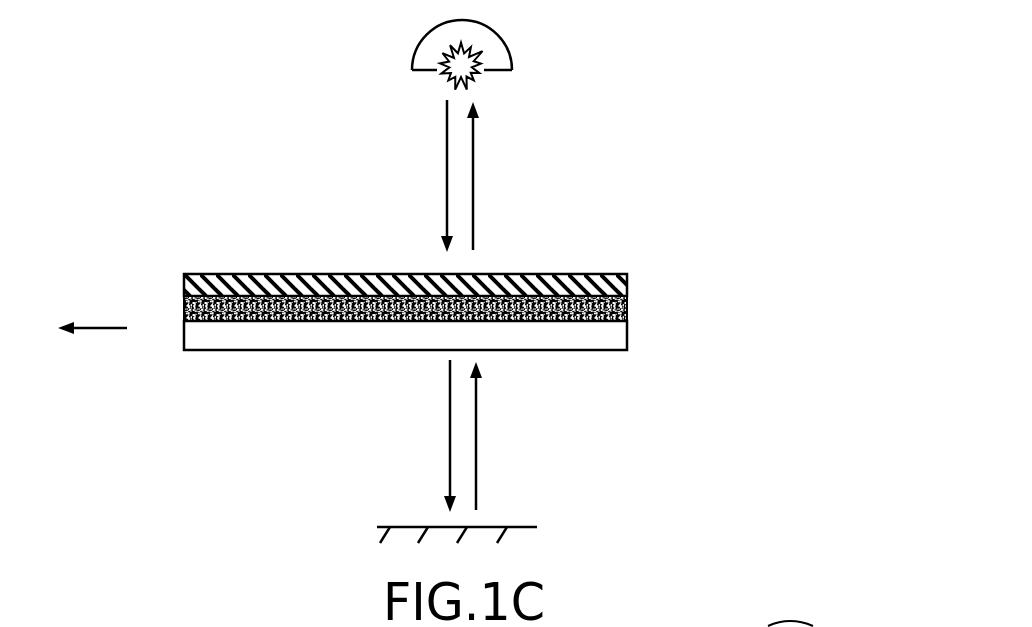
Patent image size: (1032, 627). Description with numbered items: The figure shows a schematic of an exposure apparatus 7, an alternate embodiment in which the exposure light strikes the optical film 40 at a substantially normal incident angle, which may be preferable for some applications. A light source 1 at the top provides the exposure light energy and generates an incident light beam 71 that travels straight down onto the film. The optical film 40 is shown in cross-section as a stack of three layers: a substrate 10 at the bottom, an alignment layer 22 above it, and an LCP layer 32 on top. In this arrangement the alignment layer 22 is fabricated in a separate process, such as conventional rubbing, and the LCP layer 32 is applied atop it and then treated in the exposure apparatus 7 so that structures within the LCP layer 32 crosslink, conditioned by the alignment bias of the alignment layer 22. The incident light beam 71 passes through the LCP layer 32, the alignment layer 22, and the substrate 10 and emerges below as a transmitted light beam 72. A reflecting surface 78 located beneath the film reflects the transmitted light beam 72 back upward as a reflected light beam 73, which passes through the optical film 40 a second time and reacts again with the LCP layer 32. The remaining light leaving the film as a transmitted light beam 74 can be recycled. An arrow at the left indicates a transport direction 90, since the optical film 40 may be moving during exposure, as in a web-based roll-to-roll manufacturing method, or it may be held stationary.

The exposure apparatus 7 is at (681, 20).
The light source 1 is at (515, 74).
The incident light beam 71 is at (431, 169).
The transmitted light beam 74 is at (483, 161).
The LCP layer 32 is at (637, 276).
The alignment layer 22 is at (637, 303).
The substrate 10 is at (449, 332).
The optical film 40 is at (480, 298).
The transport direction 90 is at (92, 306).
The transmitted light beam 72 is at (434, 441).
The reflected light beam 73 is at (495, 441).
The reflecting surface 78 is at (550, 524).